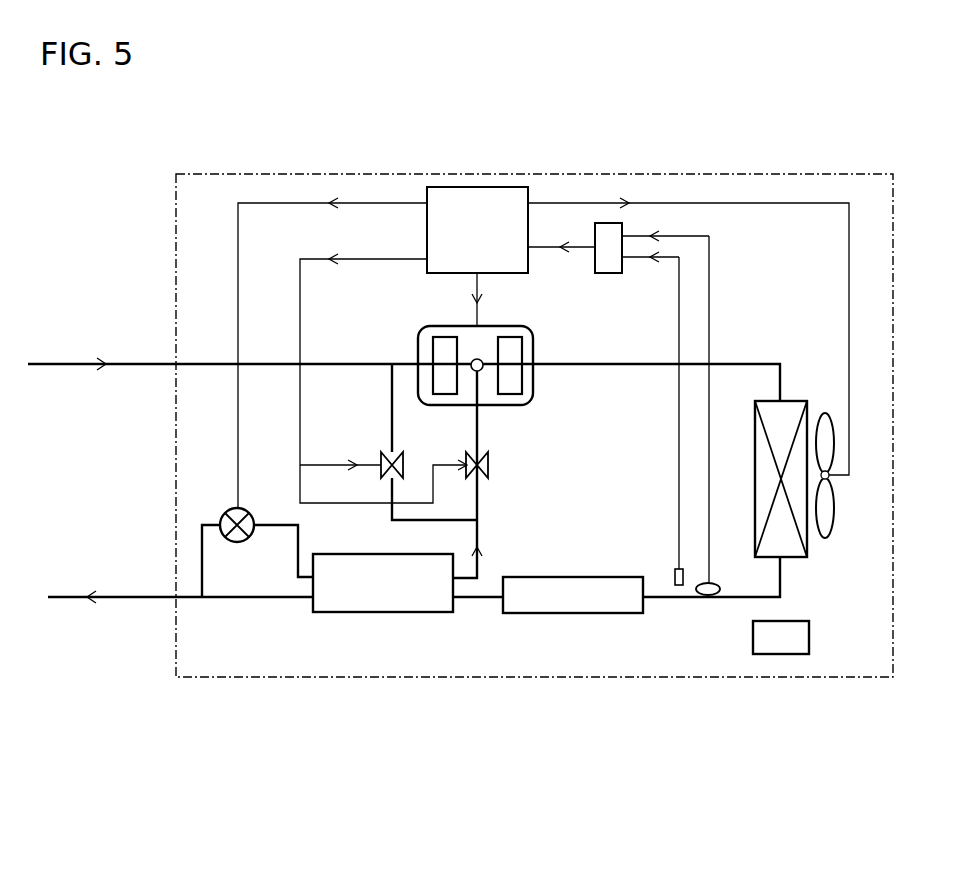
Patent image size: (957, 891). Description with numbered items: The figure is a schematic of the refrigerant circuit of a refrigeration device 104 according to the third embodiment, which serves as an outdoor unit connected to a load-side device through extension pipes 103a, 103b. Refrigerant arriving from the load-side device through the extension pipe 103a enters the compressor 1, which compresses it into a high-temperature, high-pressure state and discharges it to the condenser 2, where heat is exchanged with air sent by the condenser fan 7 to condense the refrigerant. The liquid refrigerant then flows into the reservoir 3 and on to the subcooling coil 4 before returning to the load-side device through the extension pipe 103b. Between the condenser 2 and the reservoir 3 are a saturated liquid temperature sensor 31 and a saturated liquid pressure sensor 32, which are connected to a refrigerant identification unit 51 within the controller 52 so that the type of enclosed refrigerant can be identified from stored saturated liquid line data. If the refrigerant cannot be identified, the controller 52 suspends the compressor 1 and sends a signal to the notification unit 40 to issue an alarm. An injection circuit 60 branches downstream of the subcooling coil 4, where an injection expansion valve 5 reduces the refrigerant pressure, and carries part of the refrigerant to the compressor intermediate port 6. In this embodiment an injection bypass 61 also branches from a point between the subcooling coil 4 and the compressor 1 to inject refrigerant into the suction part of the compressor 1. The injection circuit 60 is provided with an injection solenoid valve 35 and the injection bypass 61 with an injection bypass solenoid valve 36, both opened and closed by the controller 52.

The compressor 1 is at (533, 330).
The condenser 2 is at (790, 401).
The reservoir 3 is at (565, 613).
The subcooling coil 4 is at (370, 612).
The injection expansion valve 5 is at (228, 508).
The compressor intermediate port 6 is at (471, 371).
The condenser fan 7 is at (835, 505).
The saturated liquid temperature sensor 31 is at (714, 582).
The saturated liquid pressure sensor 32 is at (678, 568).
The injection solenoid valve 35 is at (492, 468).
The injection bypass solenoid valve 36 is at (381, 458).
The notification unit 40 is at (800, 620).
The refrigerant identification unit 51 is at (612, 273).
The controller 52 is at (427, 227).
The injection circuit 60 is at (485, 426).
The injection bypass 61 is at (391, 389).
The extension pipe 103a is at (118, 368).
The extension pipe 103b is at (118, 601).
The refrigeration device 104 is at (238, 679).